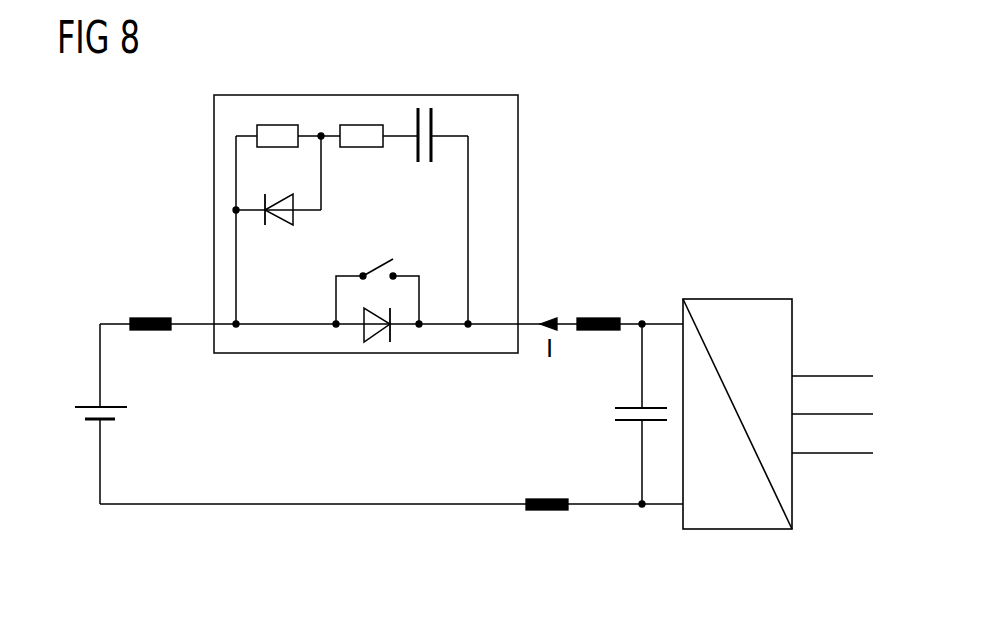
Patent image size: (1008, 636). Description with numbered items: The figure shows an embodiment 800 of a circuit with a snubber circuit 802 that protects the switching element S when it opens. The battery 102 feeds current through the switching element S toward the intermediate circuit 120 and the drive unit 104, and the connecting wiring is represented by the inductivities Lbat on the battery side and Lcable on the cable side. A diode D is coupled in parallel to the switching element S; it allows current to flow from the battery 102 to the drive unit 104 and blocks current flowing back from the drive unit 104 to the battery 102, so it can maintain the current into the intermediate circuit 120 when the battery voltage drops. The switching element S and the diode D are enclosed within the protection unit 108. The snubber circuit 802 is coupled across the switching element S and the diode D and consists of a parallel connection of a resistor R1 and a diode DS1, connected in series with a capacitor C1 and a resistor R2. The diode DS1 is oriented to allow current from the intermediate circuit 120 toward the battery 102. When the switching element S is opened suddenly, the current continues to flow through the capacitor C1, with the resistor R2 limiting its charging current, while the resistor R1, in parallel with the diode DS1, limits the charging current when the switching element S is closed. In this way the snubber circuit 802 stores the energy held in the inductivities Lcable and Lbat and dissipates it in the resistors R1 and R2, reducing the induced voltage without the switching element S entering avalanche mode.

The embodiment of a circuit with a snubber circuit 800 is at (372, 545).
The snubber circuit 802 is at (214, 166).
The protection unit housing 108 is at (518, 125).
The battery 102 is at (93, 433).
The drive unit 104 is at (879, 558).
The intermediate circuit 120 is at (628, 432).
The resistor R1 is at (278, 125).
The resistor R2 is at (361, 125).
The capacitor C1 is at (421, 103).
The diode DS1 is at (280, 228).
The switching element S is at (376, 258).
The diode D is at (381, 342).
The inductivity Lbat is at (151, 304).
The inductivity Lcable is at (569, 394).